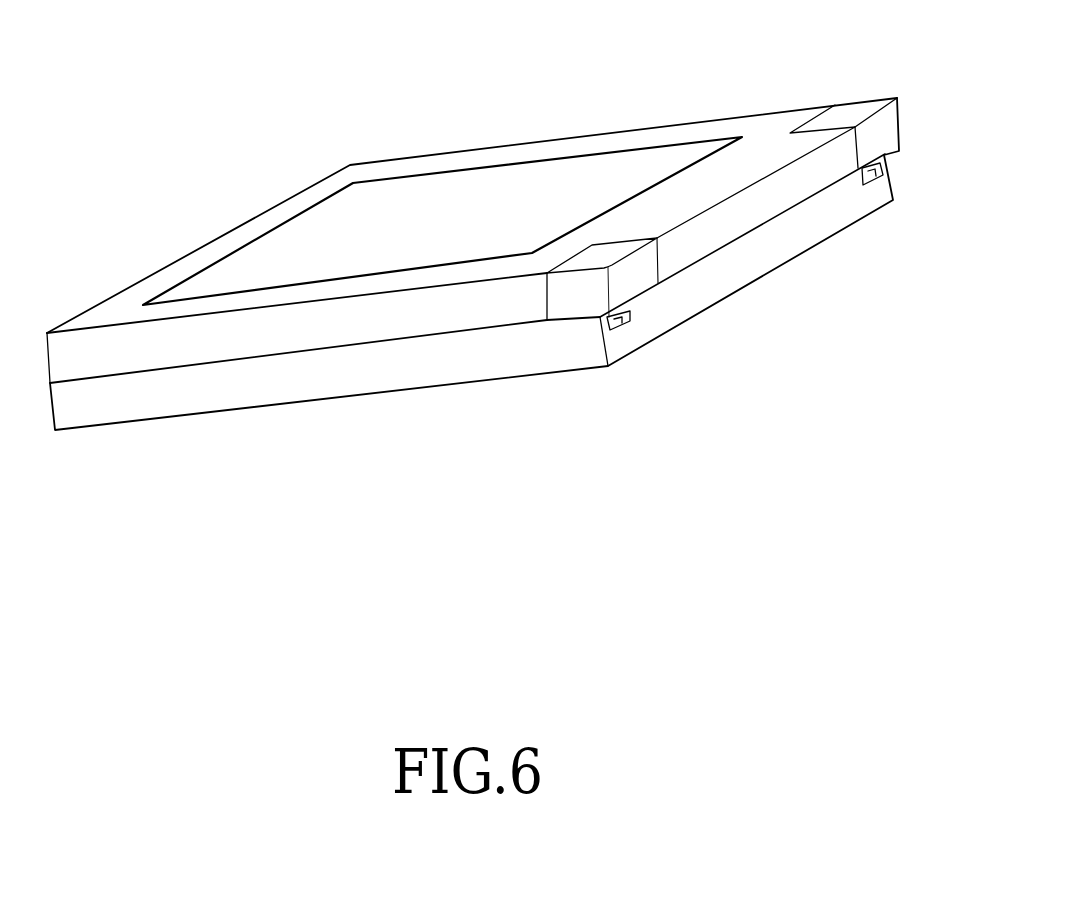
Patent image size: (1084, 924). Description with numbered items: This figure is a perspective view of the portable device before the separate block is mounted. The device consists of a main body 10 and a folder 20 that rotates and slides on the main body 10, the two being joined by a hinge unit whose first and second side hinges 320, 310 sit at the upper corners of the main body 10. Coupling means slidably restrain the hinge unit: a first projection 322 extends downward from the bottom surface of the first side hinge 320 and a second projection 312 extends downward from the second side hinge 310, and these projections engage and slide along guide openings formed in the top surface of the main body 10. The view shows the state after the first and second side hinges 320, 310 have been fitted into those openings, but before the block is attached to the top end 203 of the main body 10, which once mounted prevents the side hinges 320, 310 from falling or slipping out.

The main body 10 is at (275, 414).
The folder 20 is at (478, 140).
The top end 203 is at (777, 255).
The second side hinge 310 is at (575, 302).
The second projection 312 is at (627, 320).
The first side hinge 320 is at (860, 107).
The first projection 322 is at (873, 182).